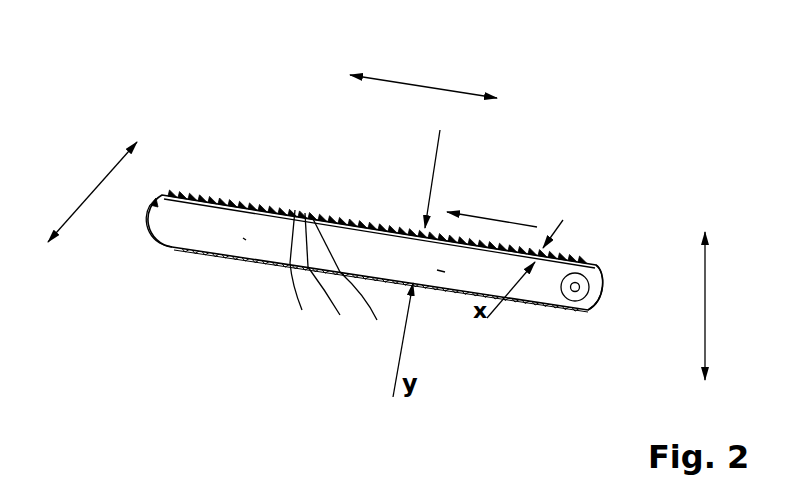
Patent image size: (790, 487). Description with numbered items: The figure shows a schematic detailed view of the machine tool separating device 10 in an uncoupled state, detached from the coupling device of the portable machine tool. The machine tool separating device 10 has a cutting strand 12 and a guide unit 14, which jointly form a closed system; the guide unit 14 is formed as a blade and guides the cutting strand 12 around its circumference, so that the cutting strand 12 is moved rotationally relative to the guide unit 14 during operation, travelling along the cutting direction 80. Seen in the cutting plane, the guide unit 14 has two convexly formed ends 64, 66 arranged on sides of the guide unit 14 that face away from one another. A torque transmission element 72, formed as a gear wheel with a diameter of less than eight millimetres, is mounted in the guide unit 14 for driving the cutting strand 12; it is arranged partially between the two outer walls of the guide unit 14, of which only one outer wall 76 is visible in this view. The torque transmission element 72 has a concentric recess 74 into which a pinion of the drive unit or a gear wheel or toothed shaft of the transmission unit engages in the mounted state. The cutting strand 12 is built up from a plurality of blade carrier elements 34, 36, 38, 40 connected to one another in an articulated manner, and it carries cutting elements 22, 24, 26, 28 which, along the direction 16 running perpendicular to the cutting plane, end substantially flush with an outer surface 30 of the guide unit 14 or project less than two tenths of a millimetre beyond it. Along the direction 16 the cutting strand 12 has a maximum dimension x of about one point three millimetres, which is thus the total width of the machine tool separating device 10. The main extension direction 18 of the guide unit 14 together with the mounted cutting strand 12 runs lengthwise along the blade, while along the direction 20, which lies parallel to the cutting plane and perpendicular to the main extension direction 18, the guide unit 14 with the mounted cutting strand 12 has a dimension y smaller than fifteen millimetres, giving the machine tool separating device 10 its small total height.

The machine tool separating device 10 is at (583, 142).
The cutting strand 12 is at (190, 195).
The guide unit 14 is at (190, 238).
The direction perpendicular to the cutting plane 16 is at (95, 190).
The main extension direction 18 is at (424, 82).
The direction parallel to the cutting plane 20 is at (706, 300).
The cutting element 22 is at (265, 303).
The cutting element 24 is at (295, 210).
The cutting element 26 is at (305, 213).
The cutting element 28 is at (312, 217).
The outer surface 30 is at (243, 238).
The blade carrier element 34 is at (380, 289).
The blade carrier element 36 is at (301, 299).
The blade carrier element 38 is at (330, 304).
The blade carrier element 40 is at (364, 309).
The convexly formed end 64 is at (135, 233).
The convexly formed end 66 is at (622, 277).
The torque transmission element 72 is at (592, 273).
The recess 74 is at (583, 278).
The outer wall 76 is at (437, 270).
The cutting direction 80 is at (488, 215).